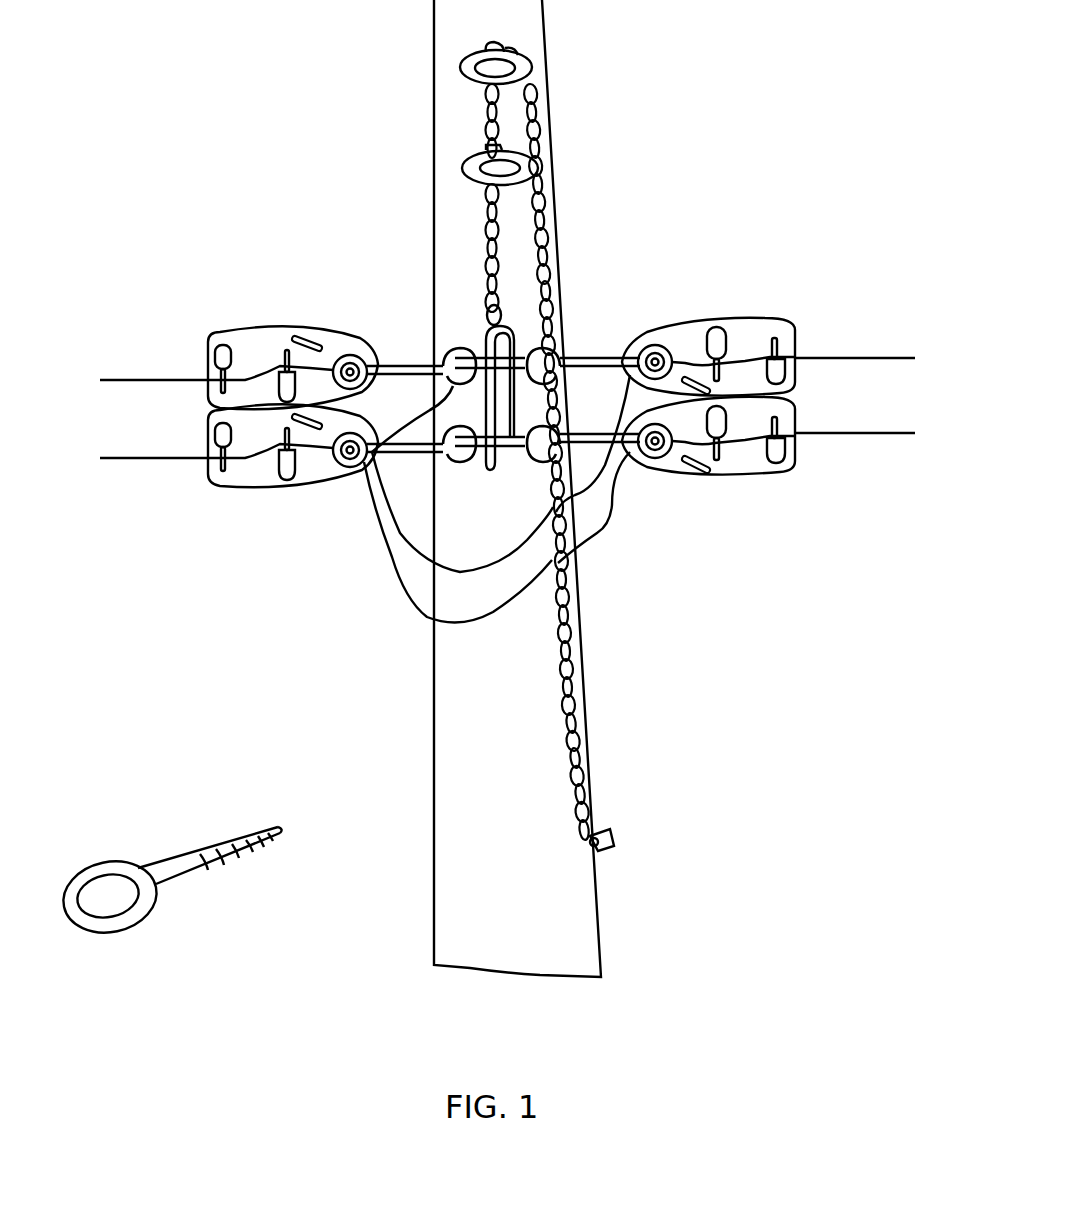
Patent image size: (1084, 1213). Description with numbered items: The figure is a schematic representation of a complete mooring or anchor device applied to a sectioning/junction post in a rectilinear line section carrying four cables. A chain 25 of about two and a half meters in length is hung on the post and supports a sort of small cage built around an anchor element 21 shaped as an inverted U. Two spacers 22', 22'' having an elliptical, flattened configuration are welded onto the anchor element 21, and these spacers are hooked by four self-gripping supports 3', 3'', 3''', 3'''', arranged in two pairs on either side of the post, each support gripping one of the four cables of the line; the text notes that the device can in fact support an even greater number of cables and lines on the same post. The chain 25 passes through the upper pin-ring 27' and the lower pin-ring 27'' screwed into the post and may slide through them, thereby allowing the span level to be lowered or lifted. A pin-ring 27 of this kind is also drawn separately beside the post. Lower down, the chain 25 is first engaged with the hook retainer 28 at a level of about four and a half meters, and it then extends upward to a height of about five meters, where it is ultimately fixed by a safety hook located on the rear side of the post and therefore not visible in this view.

The self-gripping support 3' is at (277, 341).
The self-gripping support 3'' is at (742, 327).
The self-gripping support 3''' is at (275, 490).
The self-gripping support 3'''' is at (753, 476).
The anchor element 21 is at (368, 478).
The spacer 22' is at (451, 332).
The spacer 22'' is at (487, 470).
The chain 25 is at (550, 265).
The pin-ring 27 is at (169, 845).
The upper pin-ring 27' is at (435, 63).
The lower pin-ring 27'' is at (438, 169).
The hook retainer 28 is at (604, 832).